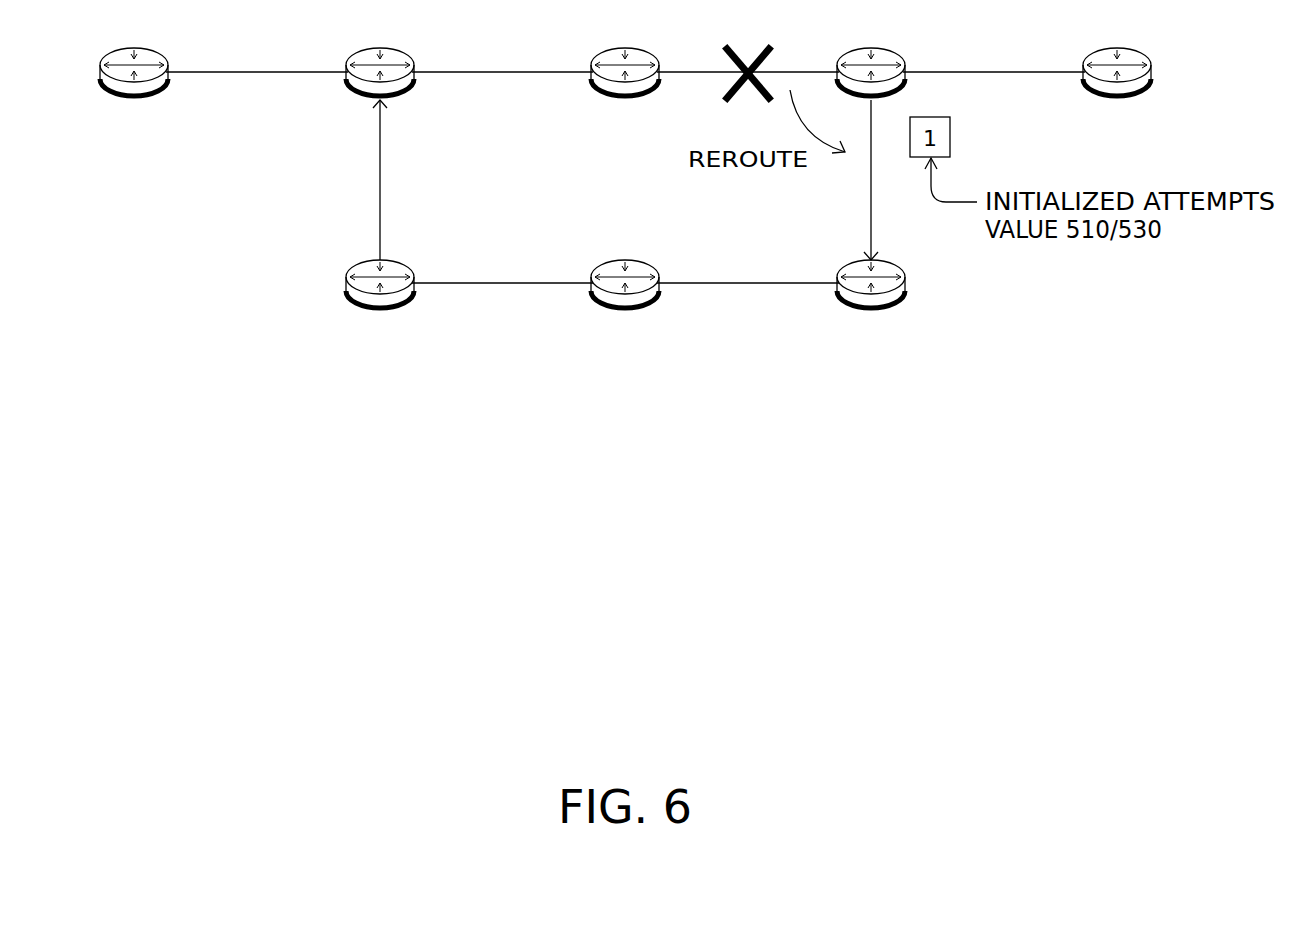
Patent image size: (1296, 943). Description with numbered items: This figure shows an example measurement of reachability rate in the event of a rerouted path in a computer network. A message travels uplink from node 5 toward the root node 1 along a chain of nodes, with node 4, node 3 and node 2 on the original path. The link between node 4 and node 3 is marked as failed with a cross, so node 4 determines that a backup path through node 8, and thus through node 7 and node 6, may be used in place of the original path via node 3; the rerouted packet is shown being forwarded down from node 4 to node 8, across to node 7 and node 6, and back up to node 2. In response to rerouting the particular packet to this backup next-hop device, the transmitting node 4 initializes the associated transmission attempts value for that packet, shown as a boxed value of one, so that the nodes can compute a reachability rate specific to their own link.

The root node 1 is at (129, 59).
The node 2 is at (376, 59).
The node 3 is at (620, 59).
The node 4 is at (866, 59).
The node 5 is at (1113, 59).
The node 6 is at (375, 270).
The node 7 is at (620, 270).
The node 8 is at (867, 270).